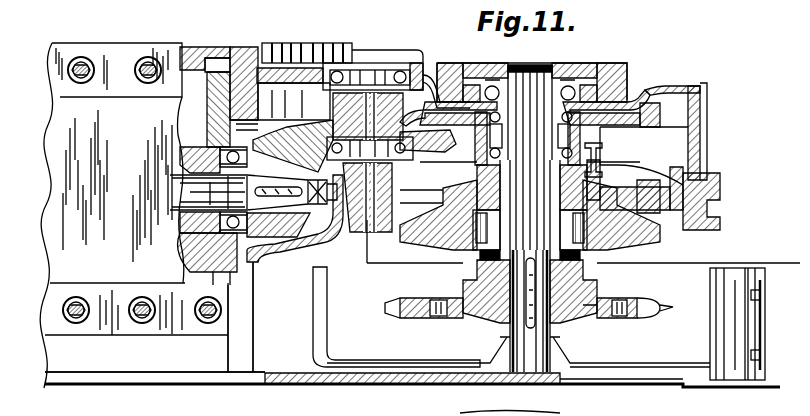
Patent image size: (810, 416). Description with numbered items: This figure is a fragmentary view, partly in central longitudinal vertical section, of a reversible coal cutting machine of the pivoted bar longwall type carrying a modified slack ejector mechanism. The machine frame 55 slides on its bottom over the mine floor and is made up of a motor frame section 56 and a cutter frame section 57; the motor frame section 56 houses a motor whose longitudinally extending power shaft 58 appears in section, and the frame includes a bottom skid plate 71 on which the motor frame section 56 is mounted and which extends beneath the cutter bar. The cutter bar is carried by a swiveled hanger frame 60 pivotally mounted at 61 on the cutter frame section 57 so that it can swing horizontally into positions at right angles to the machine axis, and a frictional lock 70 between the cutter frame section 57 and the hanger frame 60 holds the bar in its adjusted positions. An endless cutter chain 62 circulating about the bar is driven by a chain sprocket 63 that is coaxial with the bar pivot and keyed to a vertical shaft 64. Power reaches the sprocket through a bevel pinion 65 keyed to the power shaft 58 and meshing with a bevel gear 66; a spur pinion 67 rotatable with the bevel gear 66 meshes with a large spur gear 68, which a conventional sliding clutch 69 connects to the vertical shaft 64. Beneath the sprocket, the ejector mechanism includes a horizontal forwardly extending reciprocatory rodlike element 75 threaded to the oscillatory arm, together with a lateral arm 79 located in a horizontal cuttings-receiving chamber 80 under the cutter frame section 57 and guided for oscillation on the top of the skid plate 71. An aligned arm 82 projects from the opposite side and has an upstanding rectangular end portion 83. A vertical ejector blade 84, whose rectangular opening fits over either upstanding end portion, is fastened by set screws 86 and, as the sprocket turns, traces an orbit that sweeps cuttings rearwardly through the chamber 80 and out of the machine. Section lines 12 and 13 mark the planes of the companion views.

The section line 12- 12 is at (370, 31).
The section line 13- 13 is at (515, 402).
The machine frame 55 is at (62, 243).
The motor frame section 56 is at (207, 47).
The cutter frame section 57 is at (693, 133).
The power shaft 58 is at (187, 227).
The swiveled hanger frame 60 is at (423, 227).
The pivot 61 is at (450, 260).
The cutter chain 62 is at (417, 316).
The chain sprocket 63 is at (497, 317).
The vertical shaft 64 is at (573, 290).
The bevel pinion 65 is at (288, 256).
The bevel gear 66 is at (305, 131).
The spur pinion 67 is at (386, 63).
The large spur gear 68 is at (657, 88).
The sliding clutch 69 is at (610, 155).
The frictional lock 70 is at (703, 180).
The bottom skid plate 71 is at (307, 377).
The reciprocatory rodlike element 75 is at (485, 412).
The lateral arm 79 is at (658, 368).
The cuttings-receiving chamber 80 is at (280, 317).
The arm 82 is at (380, 367).
The upstanding rectangular end portion 83 is at (323, 327).
The ejector blade 84 is at (733, 363).
The set screws 86 is at (762, 353).